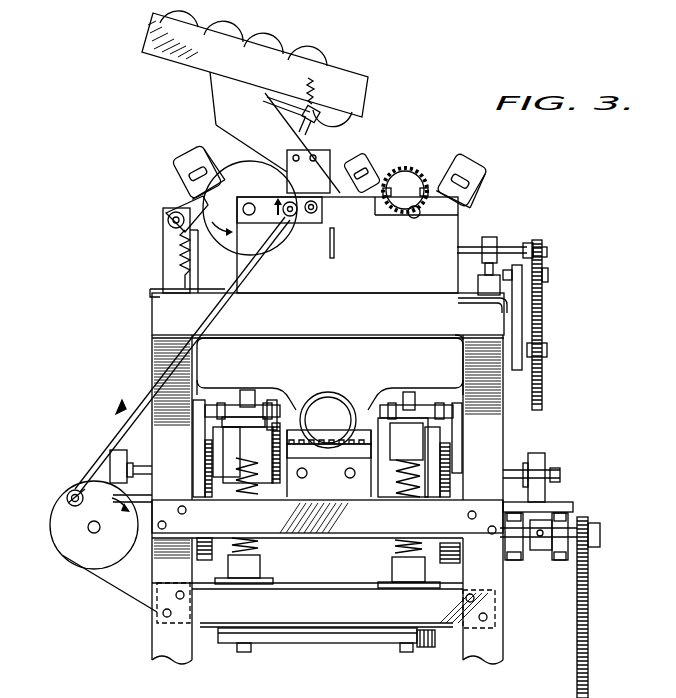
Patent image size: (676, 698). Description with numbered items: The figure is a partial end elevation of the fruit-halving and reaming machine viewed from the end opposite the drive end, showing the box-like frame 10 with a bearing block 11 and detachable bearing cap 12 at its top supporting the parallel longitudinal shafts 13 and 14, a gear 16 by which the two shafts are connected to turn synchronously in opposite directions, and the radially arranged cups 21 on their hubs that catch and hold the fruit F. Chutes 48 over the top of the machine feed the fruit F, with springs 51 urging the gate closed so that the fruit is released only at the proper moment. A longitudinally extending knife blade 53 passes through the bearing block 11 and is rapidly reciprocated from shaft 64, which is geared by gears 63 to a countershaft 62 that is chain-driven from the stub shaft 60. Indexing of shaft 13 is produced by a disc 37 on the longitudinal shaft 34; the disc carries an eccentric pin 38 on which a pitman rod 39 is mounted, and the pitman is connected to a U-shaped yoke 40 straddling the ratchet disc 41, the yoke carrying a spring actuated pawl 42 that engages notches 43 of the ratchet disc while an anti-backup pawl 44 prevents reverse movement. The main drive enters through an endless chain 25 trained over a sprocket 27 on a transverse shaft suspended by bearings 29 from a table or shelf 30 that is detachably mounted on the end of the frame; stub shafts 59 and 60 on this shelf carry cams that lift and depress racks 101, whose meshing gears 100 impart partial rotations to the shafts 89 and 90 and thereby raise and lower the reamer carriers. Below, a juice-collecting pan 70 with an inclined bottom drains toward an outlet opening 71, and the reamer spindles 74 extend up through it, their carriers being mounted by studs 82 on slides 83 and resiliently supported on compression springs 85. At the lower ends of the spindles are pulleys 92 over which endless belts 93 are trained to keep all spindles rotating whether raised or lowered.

The fruit F is at (310, 62).
The chutes 48 is at (348, 78).
The springs 51 is at (308, 92).
The notches 43 is at (238, 207).
The shaft 13 is at (249, 203).
The U-shaped yoke 40 is at (292, 218).
The spring actuated pawl 42 is at (318, 207).
The bearing blocks 11 is at (432, 244).
The detachable bearing caps 12 is at (388, 212).
The shaft 14 is at (414, 220).
The knife blade 53 is at (338, 248).
The gear 16 is at (418, 180).
The cups 21 is at (190, 163).
The spring actuated anti-backup pawl 44 is at (170, 216).
The ratchet disc 41 is at (216, 234).
The frame 10 is at (478, 445).
The juice-collecting pan 70 is at (330, 374).
The outlet opening 71 is at (348, 405).
The meshing gears 100 is at (329, 458).
The shaft 89 is at (314, 482).
The shaft 90 is at (362, 482).
The racks 101 is at (292, 412).
The studs 82 is at (228, 405).
The slides 83 is at (204, 462).
The reamer spindles 74 is at (408, 400).
The disc 37 is at (62, 532).
The shaft 34 is at (90, 532).
The eccentric pin 38 is at (66, 498).
The pitman rod 39 is at (86, 470).
The stub shaft 59 is at (146, 470).
The compression springs 85 is at (258, 546).
The endless belts 93 is at (312, 641).
The pulleys 92 is at (250, 650).
The shaft 64 is at (505, 251).
The gears 63 is at (548, 313).
The countershaft 62 is at (548, 350).
The stub shaft 60 is at (562, 475).
The table or shelf 30 is at (572, 504).
The bearings 29 is at (558, 562).
The endless chain 25 is at (590, 588).
The sprocket 27 is at (596, 530).